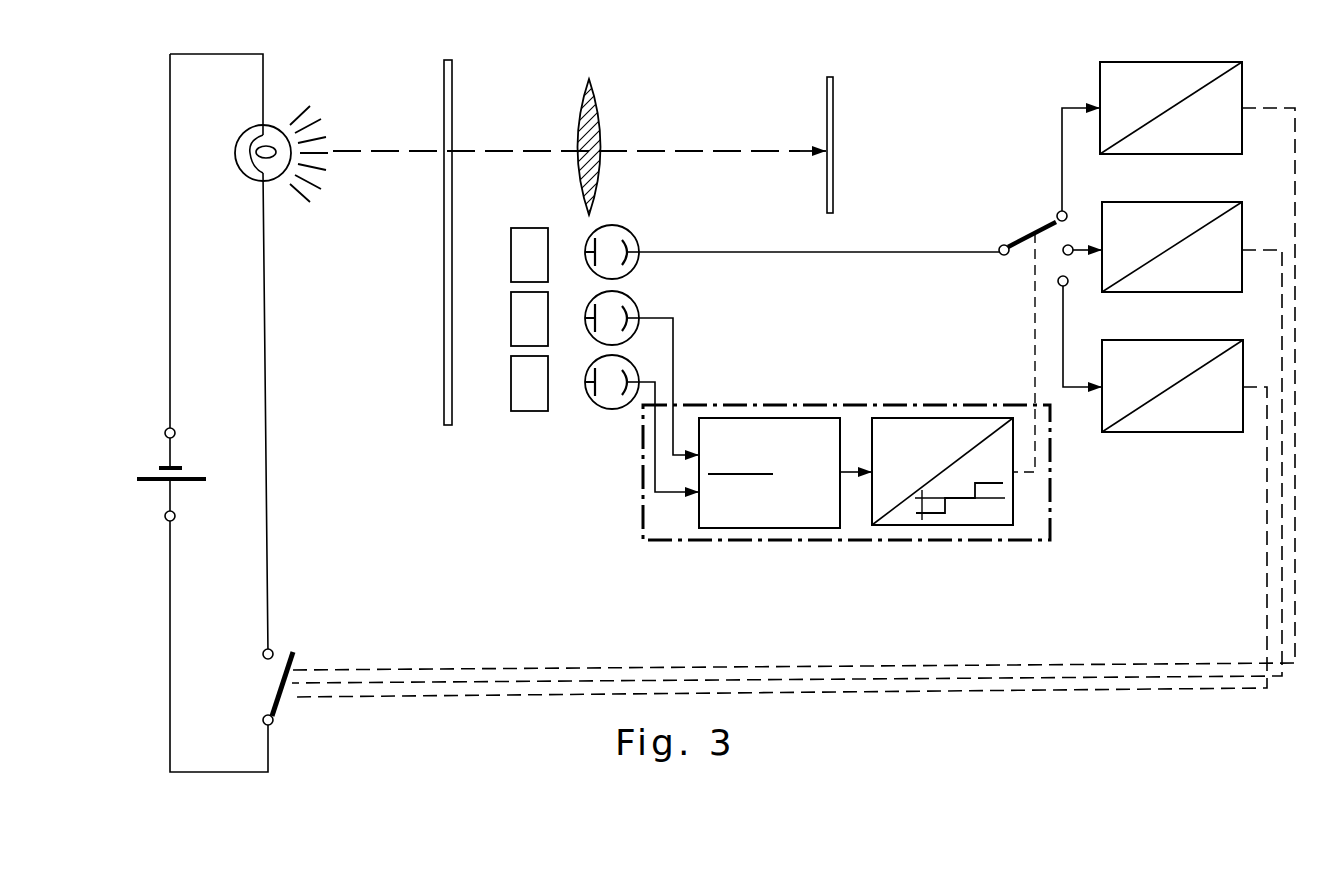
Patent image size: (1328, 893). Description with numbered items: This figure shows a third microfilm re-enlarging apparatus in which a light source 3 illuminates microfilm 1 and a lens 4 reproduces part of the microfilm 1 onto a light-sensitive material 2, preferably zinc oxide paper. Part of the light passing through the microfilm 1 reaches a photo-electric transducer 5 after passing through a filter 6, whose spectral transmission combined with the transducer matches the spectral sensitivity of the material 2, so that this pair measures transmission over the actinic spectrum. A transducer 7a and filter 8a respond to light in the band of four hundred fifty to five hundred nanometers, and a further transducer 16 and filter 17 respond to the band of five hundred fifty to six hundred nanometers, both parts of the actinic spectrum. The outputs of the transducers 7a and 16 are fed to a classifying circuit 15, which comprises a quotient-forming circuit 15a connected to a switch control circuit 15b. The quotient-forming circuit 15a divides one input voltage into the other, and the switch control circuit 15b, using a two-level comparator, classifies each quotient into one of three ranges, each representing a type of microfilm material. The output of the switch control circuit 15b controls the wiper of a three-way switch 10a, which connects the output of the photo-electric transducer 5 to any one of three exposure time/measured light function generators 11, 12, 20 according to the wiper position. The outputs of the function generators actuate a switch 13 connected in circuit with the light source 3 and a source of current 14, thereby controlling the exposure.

The microfilm 1 is at (455, 75).
The light-sensitive material 2 is at (826, 88).
The light source 3 is at (247, 162).
The lens 4 is at (586, 98).
The photo-electric transducer 5 is at (620, 240).
The filter 6 is at (521, 239).
The transducer 7a is at (620, 308).
The filter 8a is at (524, 307).
The three-way switch 10a is at (1045, 218).
The exposure time/measured light function generator 11 is at (1232, 80).
The exposure time/measured light function generator 12 is at (1228, 230).
The switch 13 is at (285, 677).
The source of current 14 is at (183, 476).
The classifying circuit 15 is at (833, 405).
The quotient-forming circuit 15a is at (773, 430).
The switch control circuit 15b is at (952, 430).
The transducer 16 is at (613, 362).
The filter 17 is at (521, 372).
The exposure time/measured light function generator 20 is at (1235, 362).